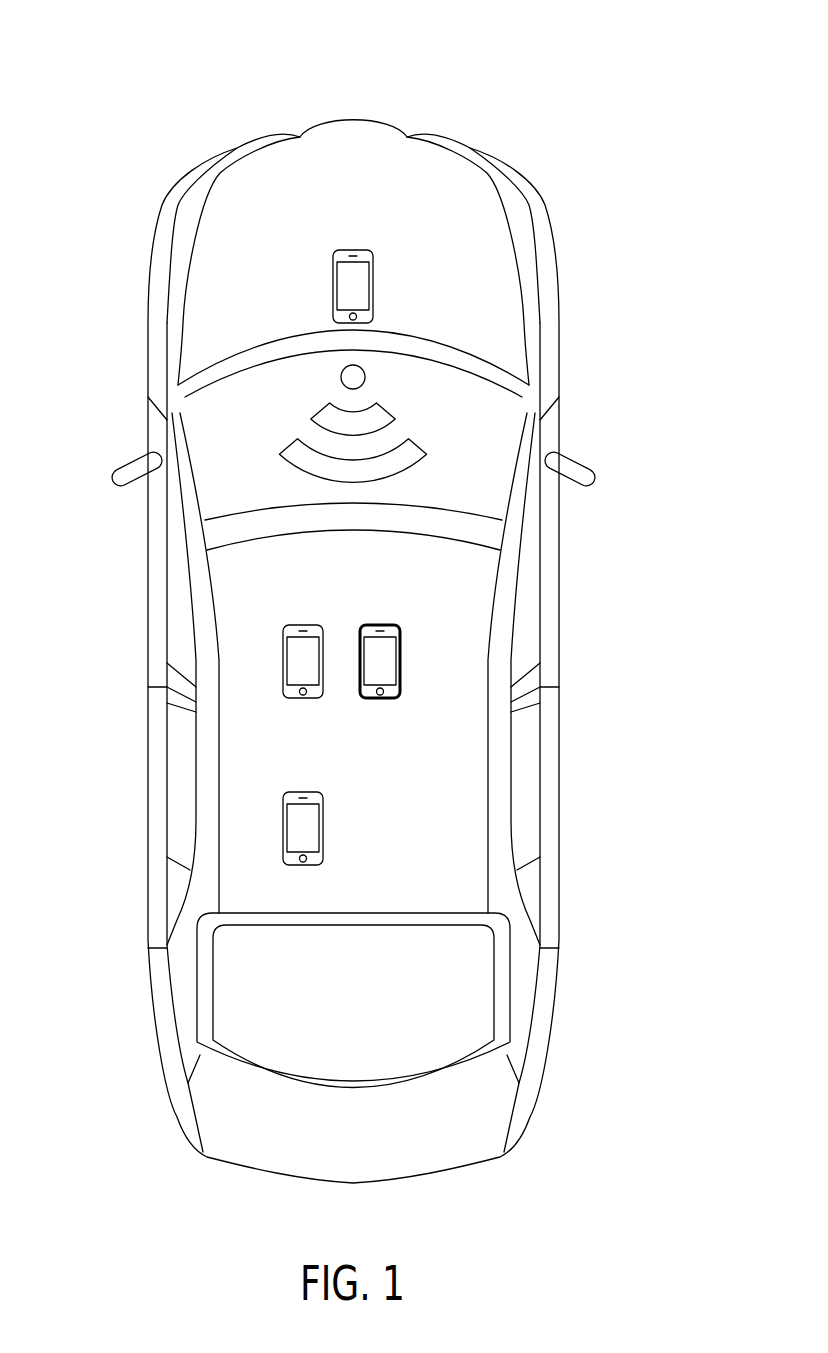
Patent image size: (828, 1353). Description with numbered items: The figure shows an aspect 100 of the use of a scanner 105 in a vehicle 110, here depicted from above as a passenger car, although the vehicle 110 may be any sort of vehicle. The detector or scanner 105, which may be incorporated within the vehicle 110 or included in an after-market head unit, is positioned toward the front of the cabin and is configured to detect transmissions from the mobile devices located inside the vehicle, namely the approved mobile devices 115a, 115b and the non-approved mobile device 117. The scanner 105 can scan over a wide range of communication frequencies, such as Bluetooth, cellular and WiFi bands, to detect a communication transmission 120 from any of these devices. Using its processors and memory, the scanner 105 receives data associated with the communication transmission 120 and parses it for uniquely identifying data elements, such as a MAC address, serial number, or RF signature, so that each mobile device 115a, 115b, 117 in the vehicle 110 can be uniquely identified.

The aspect 100 is at (561, 90).
The scanner 105 is at (355, 250).
The vehicle 110 is at (560, 321).
The approved mobile device 115a is at (303, 625).
The approved mobile device 115b is at (302, 792).
The non-approved mobile device 117 is at (378, 625).
The communication transmission 120 is at (428, 455).